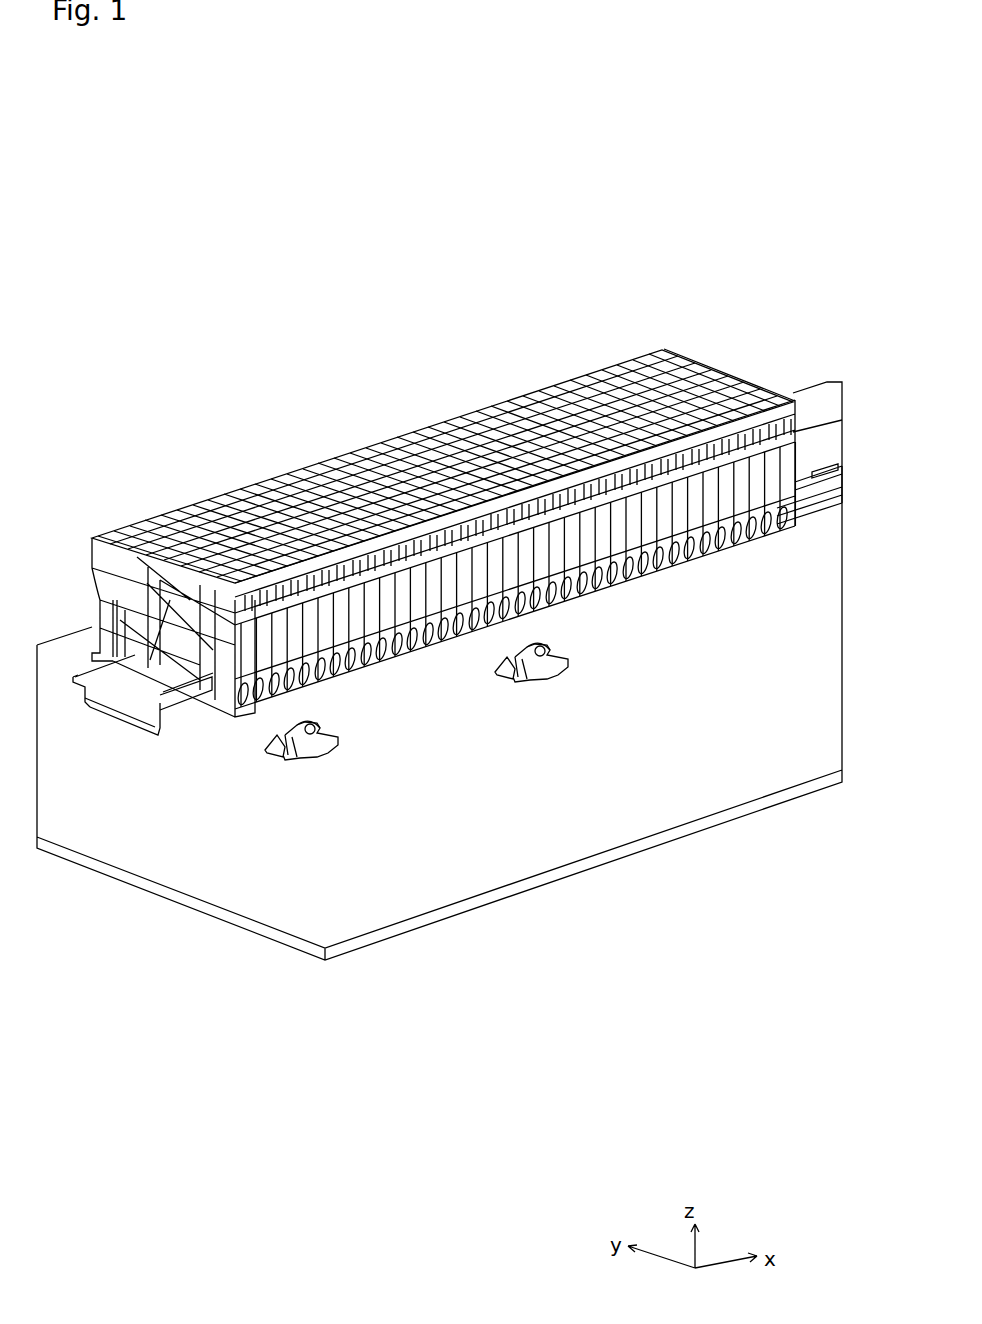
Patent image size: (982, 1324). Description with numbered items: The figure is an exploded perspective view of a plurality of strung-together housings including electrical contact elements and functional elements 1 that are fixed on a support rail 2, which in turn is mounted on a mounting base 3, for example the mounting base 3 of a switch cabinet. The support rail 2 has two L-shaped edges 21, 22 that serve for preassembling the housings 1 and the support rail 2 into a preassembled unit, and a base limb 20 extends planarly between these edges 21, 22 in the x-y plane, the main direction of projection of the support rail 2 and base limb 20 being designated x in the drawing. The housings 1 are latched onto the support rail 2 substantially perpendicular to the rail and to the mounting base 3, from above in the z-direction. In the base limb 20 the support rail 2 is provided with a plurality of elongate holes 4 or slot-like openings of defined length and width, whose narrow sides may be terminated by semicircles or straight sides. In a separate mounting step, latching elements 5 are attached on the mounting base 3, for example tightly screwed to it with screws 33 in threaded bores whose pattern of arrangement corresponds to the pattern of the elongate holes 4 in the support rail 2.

The housings 1 is at (660, 352).
The support rail 2 is at (116, 847).
The mounting base 3 is at (780, 760).
The elongate holes 4 is at (826, 459).
The latching elements 5 is at (300, 753).
The base limb 20 is at (142, 712).
The edge of the support rail 21 is at (85, 703).
The edge of the support rail 22 is at (180, 717).
The screws 33 is at (315, 738).